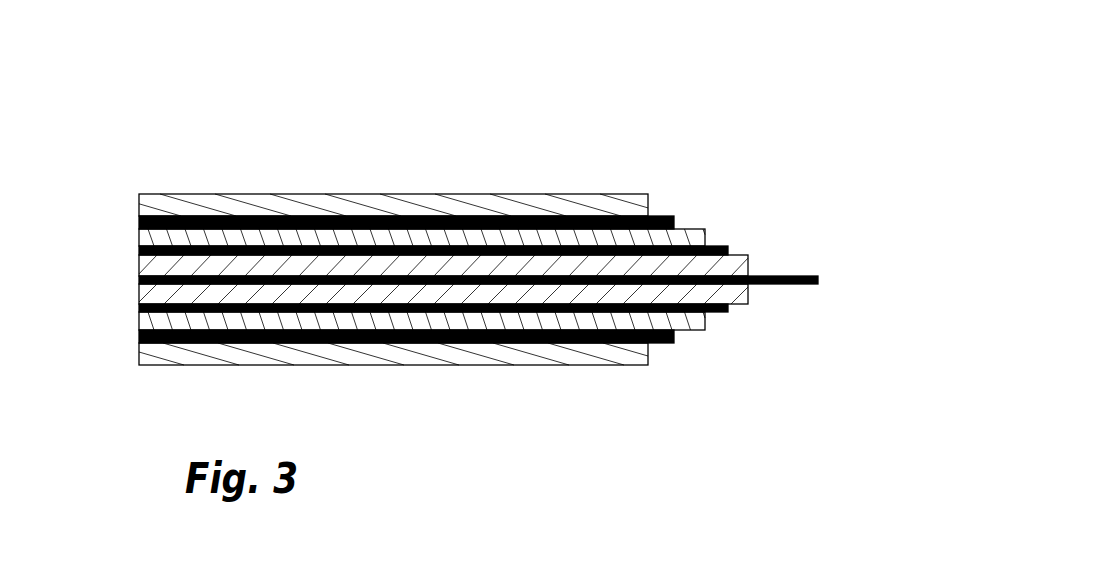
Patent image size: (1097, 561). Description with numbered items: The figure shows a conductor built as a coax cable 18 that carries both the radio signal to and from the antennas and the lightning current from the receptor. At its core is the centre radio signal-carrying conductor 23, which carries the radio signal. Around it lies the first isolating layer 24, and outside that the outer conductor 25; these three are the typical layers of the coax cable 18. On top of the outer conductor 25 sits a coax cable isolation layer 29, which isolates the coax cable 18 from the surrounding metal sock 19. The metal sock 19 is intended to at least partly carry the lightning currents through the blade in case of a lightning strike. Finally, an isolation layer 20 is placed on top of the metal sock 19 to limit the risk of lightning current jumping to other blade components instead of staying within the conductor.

The coax cable 18 is at (186, 122).
The isolation layer 20 is at (578, 194).
The metal sock 19 is at (674, 217).
The coax cable isolation layer 29 is at (705, 229).
The outer conductor 25 is at (728, 247).
The first isolating layer 24 is at (748, 255).
The centre radio signal-carrying conductor 23 is at (780, 277).